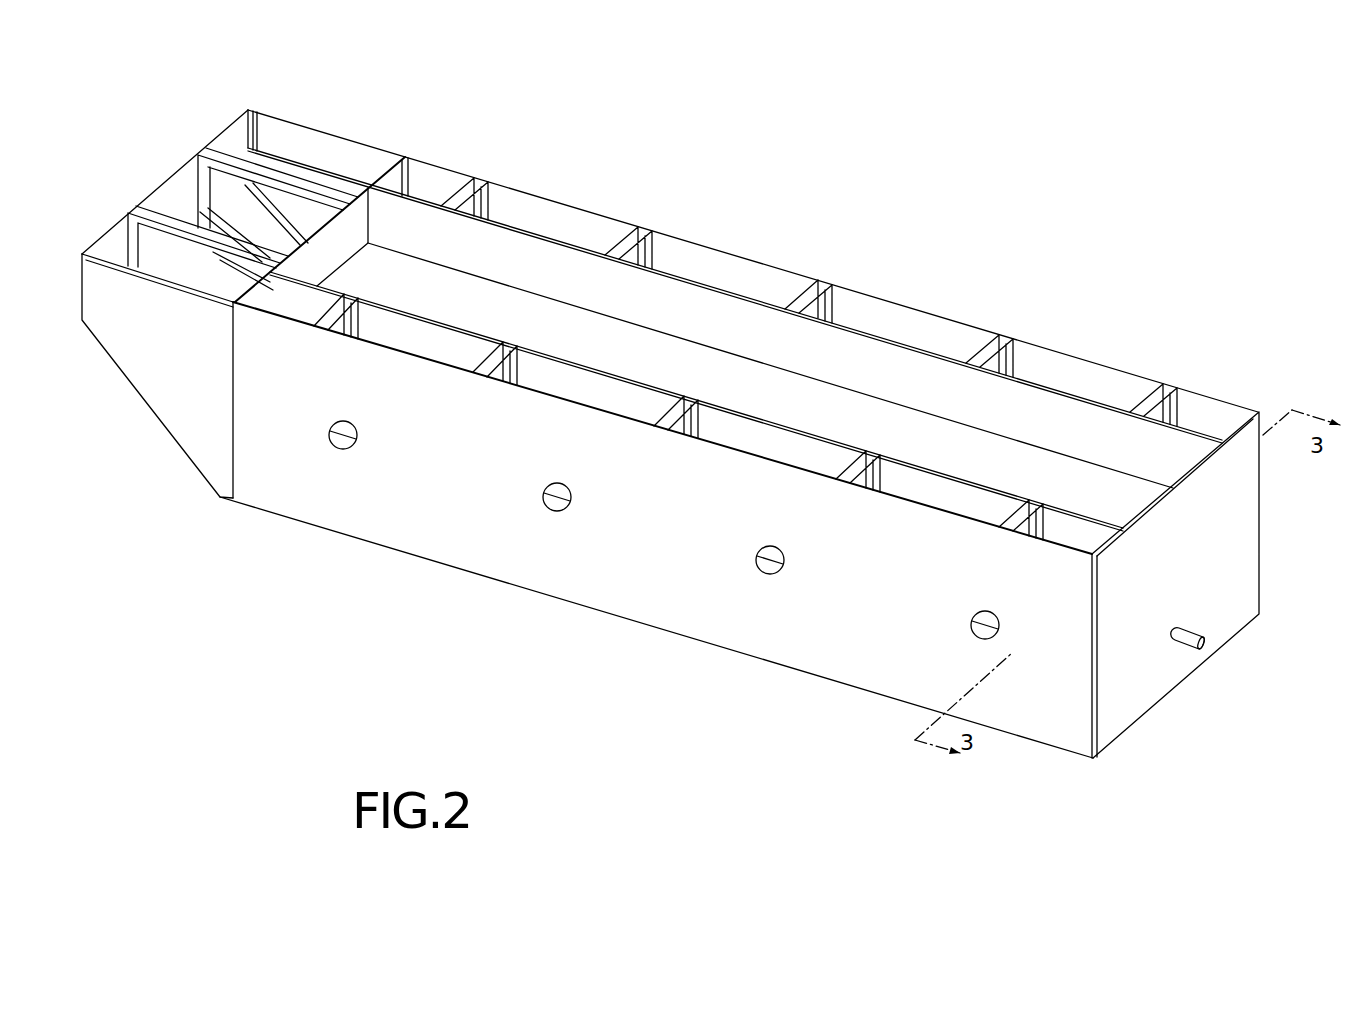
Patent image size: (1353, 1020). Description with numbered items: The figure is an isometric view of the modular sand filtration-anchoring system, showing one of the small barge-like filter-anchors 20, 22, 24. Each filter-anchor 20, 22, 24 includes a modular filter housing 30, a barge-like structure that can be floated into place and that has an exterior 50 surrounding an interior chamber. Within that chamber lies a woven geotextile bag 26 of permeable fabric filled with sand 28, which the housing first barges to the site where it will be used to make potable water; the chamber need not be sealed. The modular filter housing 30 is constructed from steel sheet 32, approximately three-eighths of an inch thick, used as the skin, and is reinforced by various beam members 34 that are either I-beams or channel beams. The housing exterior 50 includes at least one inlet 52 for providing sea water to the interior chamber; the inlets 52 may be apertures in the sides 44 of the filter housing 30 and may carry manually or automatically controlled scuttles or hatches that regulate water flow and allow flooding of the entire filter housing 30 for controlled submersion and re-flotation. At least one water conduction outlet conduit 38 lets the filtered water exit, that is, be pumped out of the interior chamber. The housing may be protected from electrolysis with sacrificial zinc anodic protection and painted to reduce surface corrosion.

The filter-anchor 20 is at (825, 150).
The filter-anchor 22 is at (667, 333).
The filter-anchor 24 is at (667, 333).
The woven geotextile bag 26 is at (705, 347).
The sand 28 is at (547, 340).
The modular filter housing 30 is at (607, 222).
The steel sheet 32 is at (440, 375).
The beam members 34 is at (1120, 740).
The water conduction outlet conduit 38 is at (1203, 643).
The sides of the housing 44 is at (923, 332).
The exterior 50 is at (578, 580).
The inlet 52 is at (336, 452).